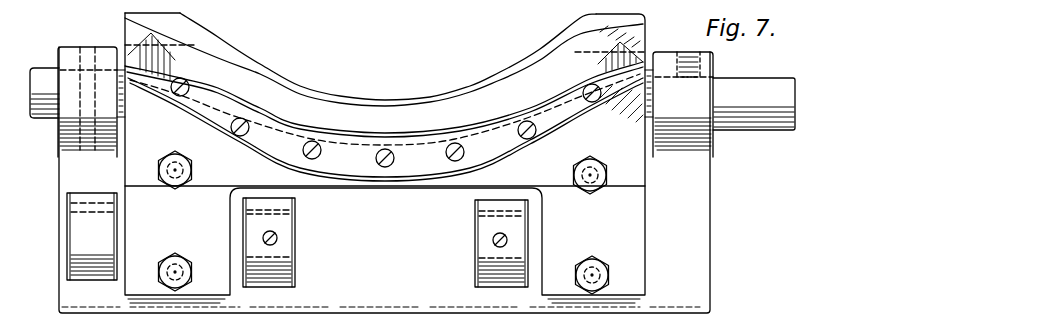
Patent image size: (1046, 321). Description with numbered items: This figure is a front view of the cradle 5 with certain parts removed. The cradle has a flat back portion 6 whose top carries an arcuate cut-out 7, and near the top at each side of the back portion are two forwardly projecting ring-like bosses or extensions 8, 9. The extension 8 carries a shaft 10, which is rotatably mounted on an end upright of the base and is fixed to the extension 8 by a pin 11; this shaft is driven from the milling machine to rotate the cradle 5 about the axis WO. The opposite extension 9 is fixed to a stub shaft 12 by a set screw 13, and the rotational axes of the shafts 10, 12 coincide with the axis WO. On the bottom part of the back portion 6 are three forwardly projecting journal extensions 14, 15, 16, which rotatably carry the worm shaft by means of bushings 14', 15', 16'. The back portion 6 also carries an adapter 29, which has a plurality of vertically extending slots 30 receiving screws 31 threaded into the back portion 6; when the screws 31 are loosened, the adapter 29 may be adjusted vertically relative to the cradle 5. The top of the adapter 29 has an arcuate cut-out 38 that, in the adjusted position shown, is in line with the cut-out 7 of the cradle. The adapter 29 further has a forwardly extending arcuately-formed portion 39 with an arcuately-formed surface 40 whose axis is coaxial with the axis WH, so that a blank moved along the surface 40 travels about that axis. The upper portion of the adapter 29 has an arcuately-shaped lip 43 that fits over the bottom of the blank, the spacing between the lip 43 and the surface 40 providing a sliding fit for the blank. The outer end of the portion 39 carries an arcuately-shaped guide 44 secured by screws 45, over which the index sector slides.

The cradle 5 is at (712, 265).
The back portion 6 is at (563, 33).
The arcuate cut-out 7 is at (452, 90).
The ring-like boss or extension 8 is at (71, 46).
The ring-like boss or extension 9 is at (665, 58).
The shaft 10 is at (43, 69).
The pin 11 is at (92, 44).
The stub shaft 12 is at (750, 120).
The set screw 13 is at (715, 63).
The journal extension 14 is at (66, 248).
The bushing 14' is at (62, 200).
The journal extension 15 is at (269, 254).
The bushing 15' is at (288, 226).
The journal extension 16 is at (481, 243).
The bushing 16' is at (478, 233).
The adapter 29 is at (533, 94).
The vertically extending slot 30 is at (175, 152).
The screw 31 is at (193, 171).
The arcuate cut-out 38 is at (375, 97).
The arcuately-formed portion 39 is at (367, 175).
The arcuately-formed surface 40 is at (411, 142).
The arcuately-shaped lip 43 is at (263, 80).
The arcuately-shaped guide 44 is at (505, 149).
The screw 45 is at (584, 98).